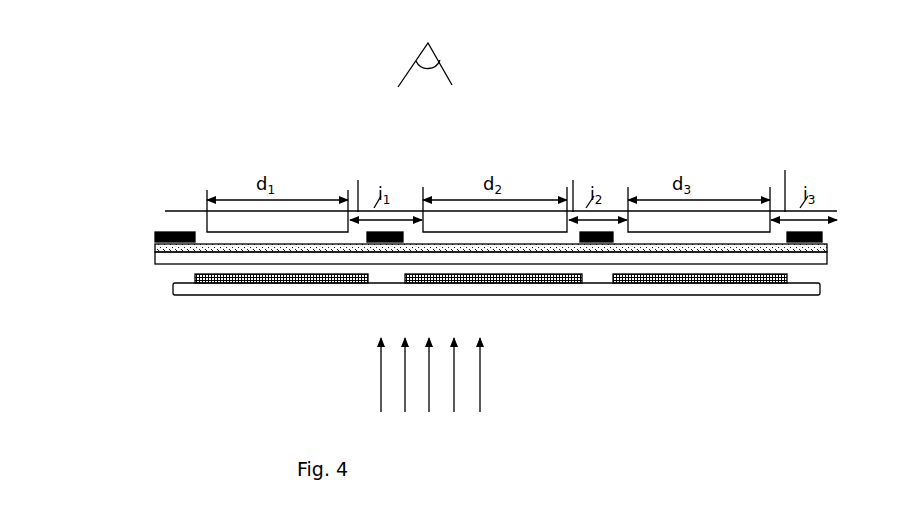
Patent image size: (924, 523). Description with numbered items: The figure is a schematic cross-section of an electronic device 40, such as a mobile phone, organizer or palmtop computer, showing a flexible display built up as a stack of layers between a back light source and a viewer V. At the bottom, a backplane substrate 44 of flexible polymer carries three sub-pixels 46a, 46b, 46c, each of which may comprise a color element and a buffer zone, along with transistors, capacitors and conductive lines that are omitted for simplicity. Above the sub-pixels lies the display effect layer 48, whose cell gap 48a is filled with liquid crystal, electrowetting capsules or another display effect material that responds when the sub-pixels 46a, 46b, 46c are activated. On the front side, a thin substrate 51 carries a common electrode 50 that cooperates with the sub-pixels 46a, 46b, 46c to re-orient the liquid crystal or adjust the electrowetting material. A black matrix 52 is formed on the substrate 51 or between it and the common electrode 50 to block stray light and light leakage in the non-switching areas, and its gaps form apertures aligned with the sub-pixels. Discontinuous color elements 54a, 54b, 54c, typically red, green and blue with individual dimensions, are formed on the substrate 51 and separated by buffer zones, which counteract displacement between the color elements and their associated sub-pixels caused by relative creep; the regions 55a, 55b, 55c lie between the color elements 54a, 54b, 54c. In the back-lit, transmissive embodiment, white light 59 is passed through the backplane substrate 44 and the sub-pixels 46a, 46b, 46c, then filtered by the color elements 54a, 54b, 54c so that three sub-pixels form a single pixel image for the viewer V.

The electronic device 40 is at (155, 55).
The viewer V is at (450, 72).
The backplane substrate 44 is at (185, 297).
The sub-pixel 46a is at (303, 283).
The sub-pixel 46b is at (513, 283).
The sub-pixel 46c is at (733, 280).
The display effect layer 48 is at (133, 275).
The cell gap 48a is at (803, 265).
The common electrode 50 is at (827, 251).
The substrate 51 is at (155, 247).
The black matrix 52 is at (158, 233).
The color element 54a is at (217, 222).
The color element 54b is at (462, 222).
The color element 54c is at (715, 208).
The inter-pixel electrode 55a is at (380, 197).
The inter-pixel electrode 55b is at (593, 200).
The inter-pixel electrode 55c is at (801, 182).
The light 59 is at (440, 418).